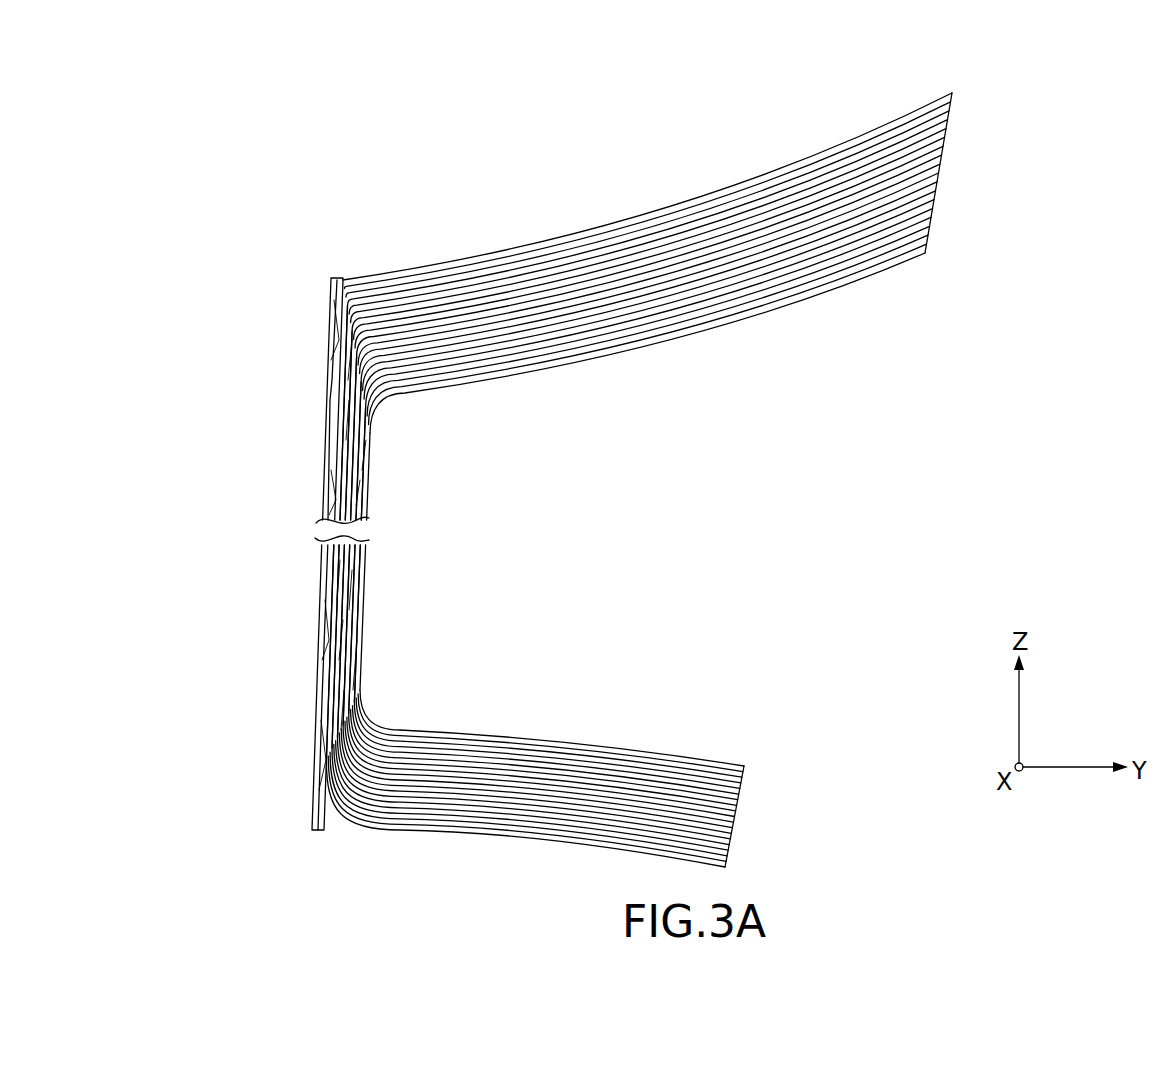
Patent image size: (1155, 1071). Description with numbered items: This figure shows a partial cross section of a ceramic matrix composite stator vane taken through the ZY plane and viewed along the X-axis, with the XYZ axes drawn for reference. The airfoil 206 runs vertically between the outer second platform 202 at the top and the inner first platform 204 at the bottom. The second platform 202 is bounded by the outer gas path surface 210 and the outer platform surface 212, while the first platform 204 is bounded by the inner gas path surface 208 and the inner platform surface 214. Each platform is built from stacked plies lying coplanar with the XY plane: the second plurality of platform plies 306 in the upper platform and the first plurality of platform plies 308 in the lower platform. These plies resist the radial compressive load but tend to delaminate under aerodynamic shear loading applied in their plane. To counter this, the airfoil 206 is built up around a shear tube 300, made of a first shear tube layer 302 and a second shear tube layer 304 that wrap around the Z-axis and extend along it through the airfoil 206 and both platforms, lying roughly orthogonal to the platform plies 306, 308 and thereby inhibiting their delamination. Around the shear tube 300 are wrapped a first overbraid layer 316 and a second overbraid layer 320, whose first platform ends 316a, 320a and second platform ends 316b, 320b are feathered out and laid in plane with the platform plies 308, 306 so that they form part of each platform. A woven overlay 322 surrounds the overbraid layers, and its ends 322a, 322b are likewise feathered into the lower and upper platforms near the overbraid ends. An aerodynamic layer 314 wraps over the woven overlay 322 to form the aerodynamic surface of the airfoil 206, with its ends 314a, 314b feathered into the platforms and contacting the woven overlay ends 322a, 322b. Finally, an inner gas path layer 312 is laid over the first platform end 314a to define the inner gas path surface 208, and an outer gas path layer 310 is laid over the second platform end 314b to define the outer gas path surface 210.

The second platform 202 is at (972, 96).
The first platform 204 is at (798, 867).
The airfoil 206 is at (446, 541).
The inner gas path surface 208 is at (552, 742).
The outer gas path surface 210 is at (783, 310).
The outer platform surface 212 is at (752, 170).
The inner platform surface 214 is at (560, 838).
The shear tube 300 is at (308, 268).
The first shear tube layer 302 is at (333, 330).
The second shear tube layer 304 is at (333, 360).
The second plurality of platform plies 306 is at (940, 135).
The first plurality of platform plies 308 is at (733, 823).
The outer gas path layer 310 is at (928, 255).
The inner gas path layer 312 is at (682, 753).
The aerodynamic layer 314 is at (352, 604).
The first overbraid layer 316 is at (330, 655).
The second overbraid layer 320 is at (330, 675).
The woven overlay 322 is at (352, 462).
The first platform end of aerodynamic layer 314a is at (744, 768).
The first platform end of first overbraid layer 316a is at (413, 755).
The first platform end of second overbraid layer 320a is at (458, 753).
The first platform end of woven overlay 322a is at (573, 750).
The second platform end of aerodynamic layer 314b is at (562, 365).
The second platform end of first overbraid layer 316b is at (697, 300).
The second platform end of second overbraid layer 320b is at (725, 300).
The second platform end of woven overlay 322b is at (636, 345).